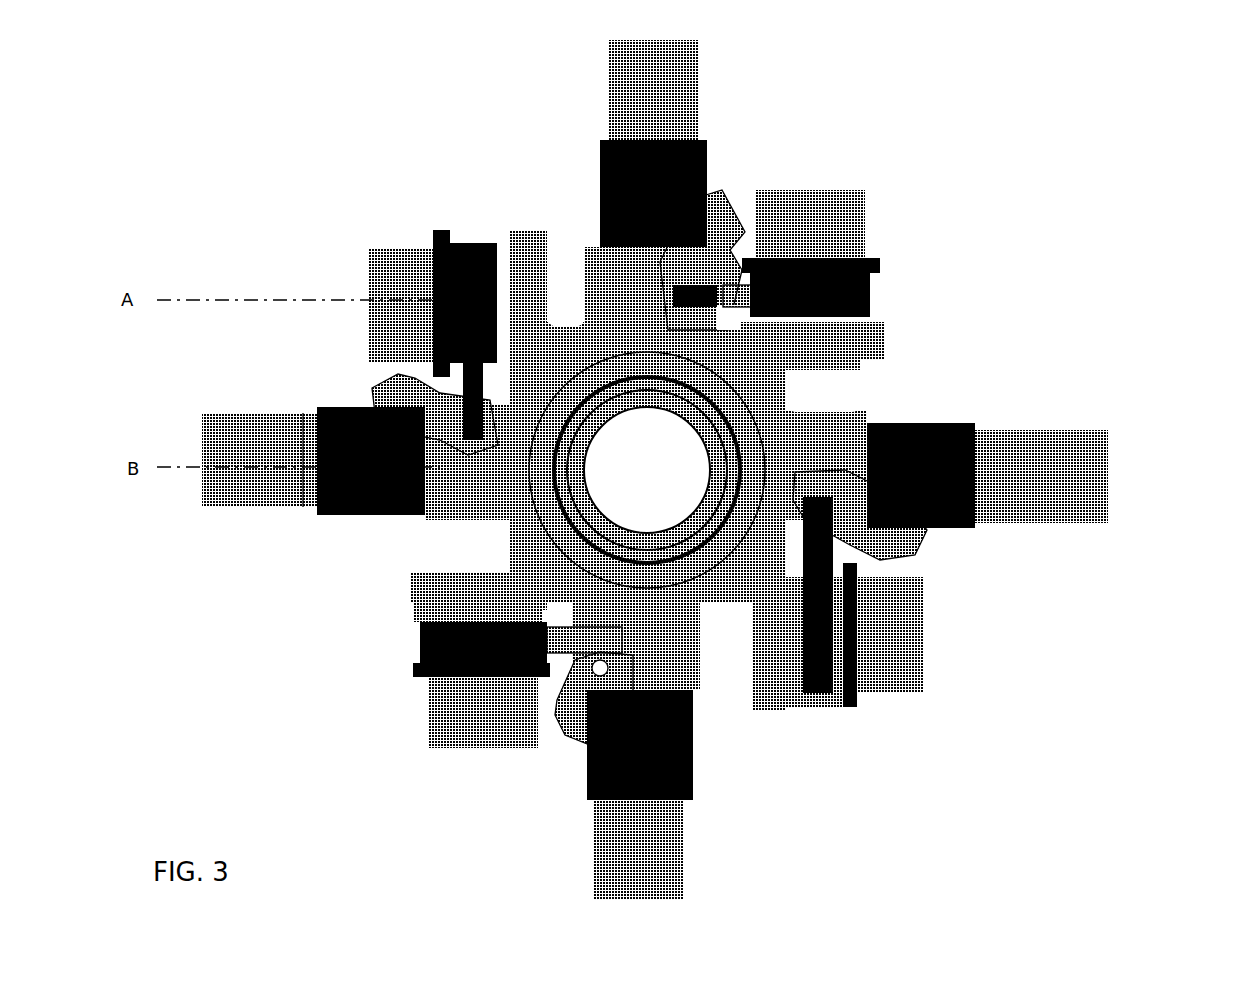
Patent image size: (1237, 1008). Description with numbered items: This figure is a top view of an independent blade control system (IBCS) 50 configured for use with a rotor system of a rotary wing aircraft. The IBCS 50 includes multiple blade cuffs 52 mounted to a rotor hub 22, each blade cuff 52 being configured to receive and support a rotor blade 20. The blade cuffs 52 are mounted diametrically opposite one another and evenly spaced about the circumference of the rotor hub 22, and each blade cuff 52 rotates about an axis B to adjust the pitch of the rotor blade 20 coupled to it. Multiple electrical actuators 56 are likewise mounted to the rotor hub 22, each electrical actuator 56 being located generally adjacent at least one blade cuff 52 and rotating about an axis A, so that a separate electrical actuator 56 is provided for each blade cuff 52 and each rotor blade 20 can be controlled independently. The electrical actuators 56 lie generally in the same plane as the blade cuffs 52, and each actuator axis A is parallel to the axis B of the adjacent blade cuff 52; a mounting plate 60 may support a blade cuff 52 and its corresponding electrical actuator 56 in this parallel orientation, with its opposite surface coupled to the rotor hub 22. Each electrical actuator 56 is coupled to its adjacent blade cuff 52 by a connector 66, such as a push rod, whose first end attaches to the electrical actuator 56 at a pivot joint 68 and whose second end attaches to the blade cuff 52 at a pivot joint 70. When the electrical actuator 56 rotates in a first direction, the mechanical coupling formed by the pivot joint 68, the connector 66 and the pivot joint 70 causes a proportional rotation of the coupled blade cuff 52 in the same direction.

The rotor blade 20 is at (212, 442).
The rotor hub 22 is at (873, 317).
The independent blade control system 50 is at (1100, 151).
The blade cuff 52 is at (362, 517).
The electrical actuator 56 is at (400, 258).
The mounting plate 60 is at (830, 550).
The connector 66 is at (375, 346).
The pivot joint 68 is at (450, 672).
The pivot joint 70 is at (572, 738).